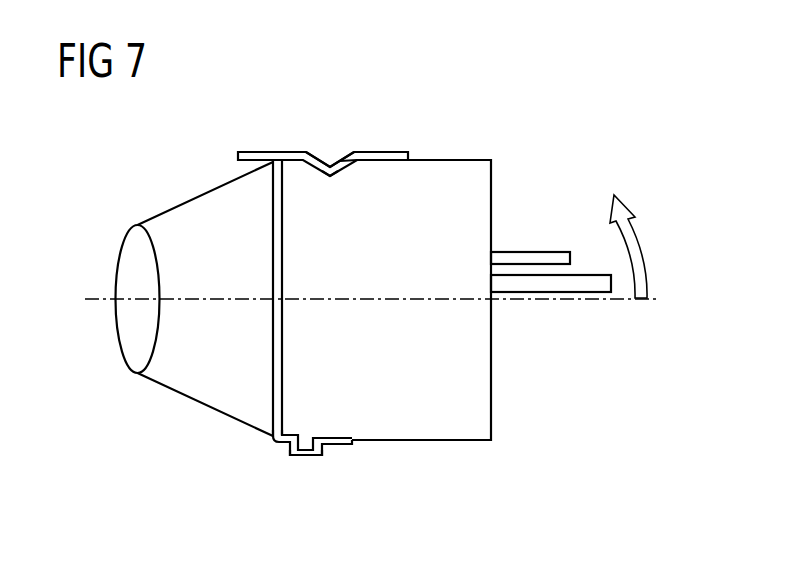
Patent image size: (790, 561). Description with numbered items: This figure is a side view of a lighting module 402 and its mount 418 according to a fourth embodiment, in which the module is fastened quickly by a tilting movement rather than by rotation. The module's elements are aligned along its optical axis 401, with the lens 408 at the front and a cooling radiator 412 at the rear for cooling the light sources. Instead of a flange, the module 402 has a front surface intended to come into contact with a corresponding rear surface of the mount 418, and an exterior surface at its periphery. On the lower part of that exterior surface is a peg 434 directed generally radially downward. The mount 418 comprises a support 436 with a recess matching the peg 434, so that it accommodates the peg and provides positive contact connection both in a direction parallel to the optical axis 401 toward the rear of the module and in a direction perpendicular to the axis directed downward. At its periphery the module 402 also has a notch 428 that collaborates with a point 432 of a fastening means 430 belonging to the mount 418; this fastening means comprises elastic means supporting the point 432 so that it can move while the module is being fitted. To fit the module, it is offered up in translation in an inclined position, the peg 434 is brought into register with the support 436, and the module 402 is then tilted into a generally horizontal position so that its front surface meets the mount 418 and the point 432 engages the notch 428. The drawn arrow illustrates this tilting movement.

The optical axis 401 is at (97, 300).
The lighting module 402 is at (472, 155).
The lens 408 is at (132, 265).
The cooling radiator 412 is at (585, 288).
The mount 418 is at (253, 152).
The notch 428 is at (330, 178).
The fastening means 430 is at (336, 152).
The point 432 is at (354, 163).
The peg 434 is at (305, 447).
The support 436 is at (303, 457).